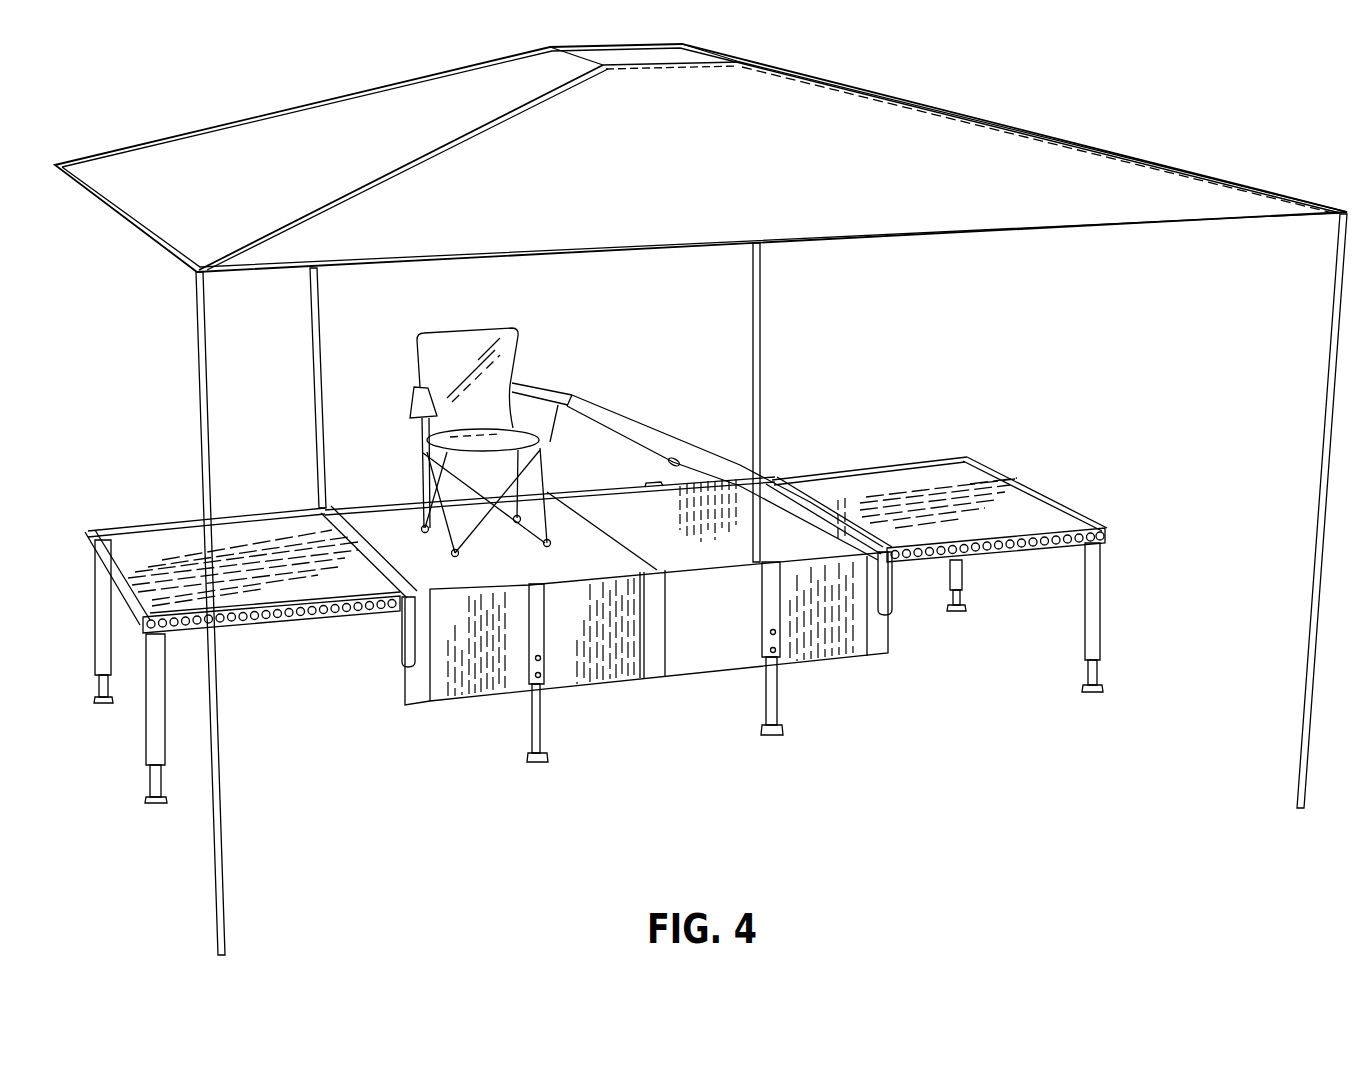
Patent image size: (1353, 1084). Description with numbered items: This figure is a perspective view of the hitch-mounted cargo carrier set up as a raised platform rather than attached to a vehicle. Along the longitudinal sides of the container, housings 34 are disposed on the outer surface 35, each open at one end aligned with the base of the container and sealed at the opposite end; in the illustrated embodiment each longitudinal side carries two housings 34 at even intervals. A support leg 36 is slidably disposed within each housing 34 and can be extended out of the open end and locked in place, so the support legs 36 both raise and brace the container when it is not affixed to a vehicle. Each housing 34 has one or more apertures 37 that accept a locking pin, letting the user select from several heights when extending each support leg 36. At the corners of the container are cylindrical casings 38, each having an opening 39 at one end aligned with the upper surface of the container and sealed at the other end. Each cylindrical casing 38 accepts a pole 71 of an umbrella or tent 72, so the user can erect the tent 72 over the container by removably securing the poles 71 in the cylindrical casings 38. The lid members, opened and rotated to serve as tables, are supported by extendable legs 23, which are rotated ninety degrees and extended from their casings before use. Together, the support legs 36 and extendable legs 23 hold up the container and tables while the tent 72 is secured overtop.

The tent 72 is at (157, 228).
The pole 71 is at (318, 370).
The opening 39 is at (318, 508).
The cylindrical casing 38 is at (402, 653).
The outer surface 35 is at (727, 627).
The housing 34 is at (528, 667).
The aperture 37 is at (547, 673).
The support leg 36 is at (545, 742).
The extendable leg 23 is at (152, 778).